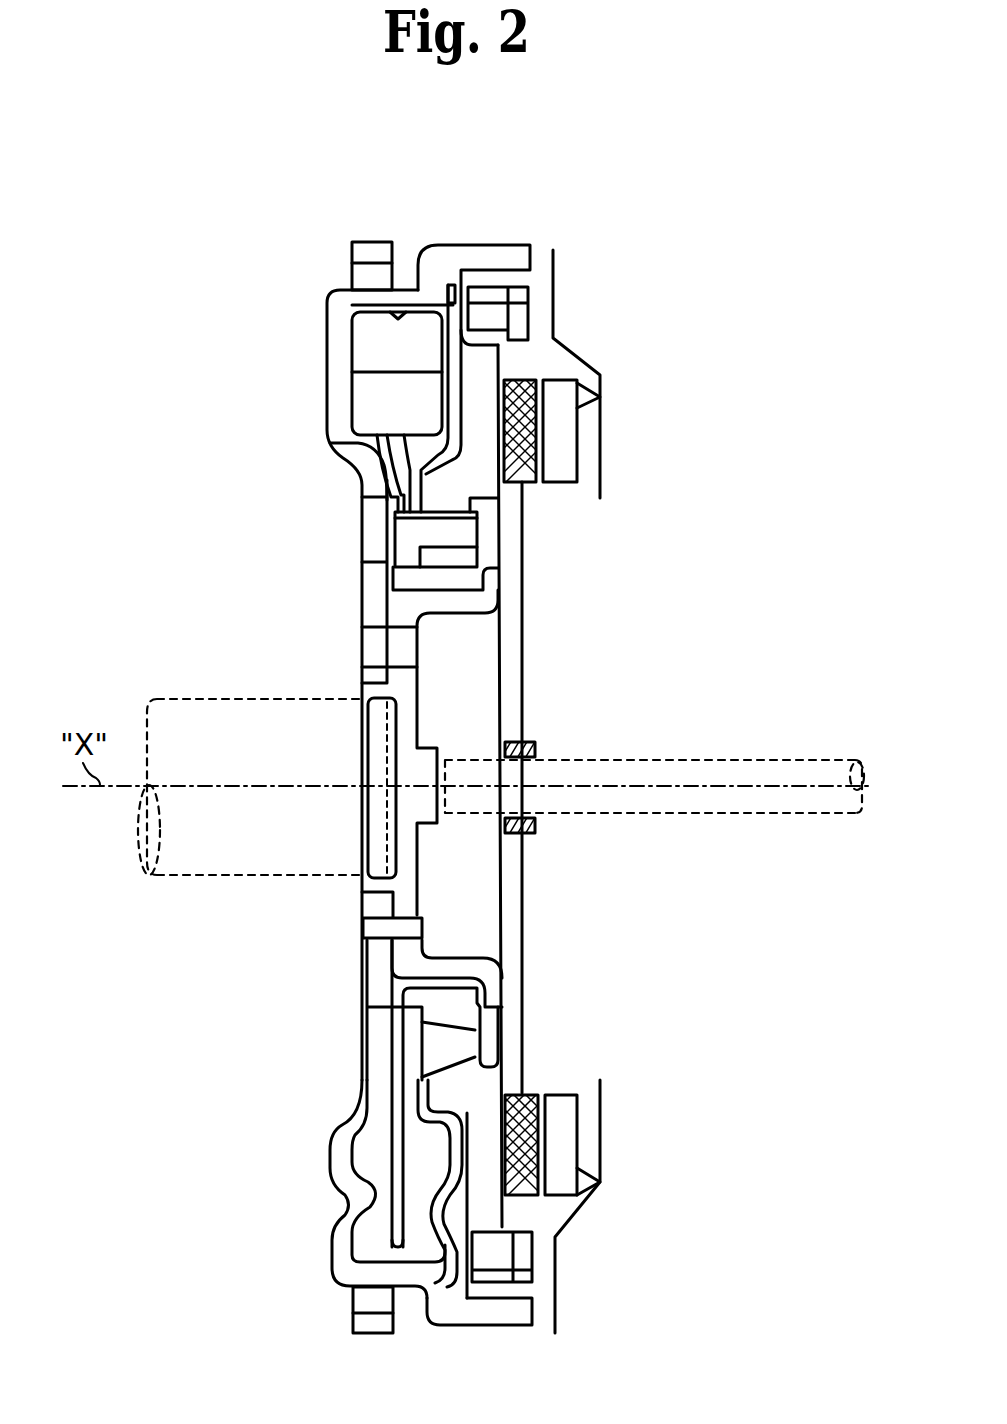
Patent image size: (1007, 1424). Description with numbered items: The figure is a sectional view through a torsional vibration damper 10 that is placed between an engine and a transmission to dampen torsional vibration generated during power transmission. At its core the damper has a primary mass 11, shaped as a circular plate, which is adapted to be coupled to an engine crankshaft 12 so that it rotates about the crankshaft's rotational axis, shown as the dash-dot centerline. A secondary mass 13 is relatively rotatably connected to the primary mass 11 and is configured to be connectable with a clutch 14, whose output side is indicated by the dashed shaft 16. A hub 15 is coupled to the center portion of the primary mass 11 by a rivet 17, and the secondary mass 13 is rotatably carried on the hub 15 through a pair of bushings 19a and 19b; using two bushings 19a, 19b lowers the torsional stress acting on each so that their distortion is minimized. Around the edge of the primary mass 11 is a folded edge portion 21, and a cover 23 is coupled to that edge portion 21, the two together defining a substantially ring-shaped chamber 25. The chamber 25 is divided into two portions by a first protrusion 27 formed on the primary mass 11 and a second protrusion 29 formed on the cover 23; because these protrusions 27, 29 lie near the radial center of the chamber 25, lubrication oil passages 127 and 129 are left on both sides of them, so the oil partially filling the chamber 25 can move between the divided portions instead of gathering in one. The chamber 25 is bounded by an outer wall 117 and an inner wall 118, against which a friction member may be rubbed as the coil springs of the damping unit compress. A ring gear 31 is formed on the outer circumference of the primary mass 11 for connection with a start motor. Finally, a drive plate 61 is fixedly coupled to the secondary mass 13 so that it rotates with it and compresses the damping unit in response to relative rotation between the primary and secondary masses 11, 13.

The torsional vibration damper 10 is at (752, 494).
The primary mass 11 is at (327, 380).
The engine crankshaft 12 is at (210, 699).
The secondary mass 13 is at (490, 413).
The clutch 14 is at (584, 505).
The hub 15 is at (363, 697).
The output shaft 16 is at (825, 758).
The rivet 17 is at (368, 928).
The bushing 19a is at (483, 587).
The bushing 19b is at (393, 593).
The folded edge portion 21 is at (493, 245).
The cover 23 is at (450, 360).
The ring-shaped chamber 25 is at (373, 1247).
The first protrusion 27 is at (347, 1190).
The second protrusion 29 is at (437, 1217).
The ring gear 31 is at (353, 280).
The drive plate 61 is at (403, 475).
The outer wall 117 is at (398, 307).
The inner wall 118 is at (333, 447).
The lubrication oil passage 127 is at (387, 1130).
The lubrication oil passage 129 is at (350, 1275).